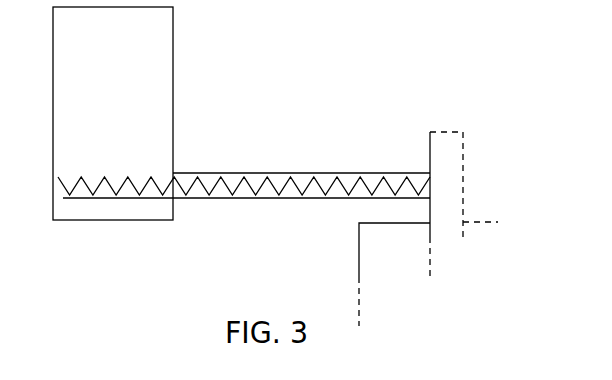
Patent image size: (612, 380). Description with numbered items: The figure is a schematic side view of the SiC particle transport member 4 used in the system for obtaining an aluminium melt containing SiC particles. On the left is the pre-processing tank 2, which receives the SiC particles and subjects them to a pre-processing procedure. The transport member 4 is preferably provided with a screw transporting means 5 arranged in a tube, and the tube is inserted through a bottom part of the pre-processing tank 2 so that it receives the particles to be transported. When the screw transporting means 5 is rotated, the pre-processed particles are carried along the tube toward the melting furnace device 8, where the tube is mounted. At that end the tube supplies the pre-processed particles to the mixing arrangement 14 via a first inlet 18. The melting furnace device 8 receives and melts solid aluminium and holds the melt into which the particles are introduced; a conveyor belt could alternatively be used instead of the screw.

The pre-processing tank 2 is at (113, 113).
The SiC particle transport member 4 is at (275, 173).
The screw transporting means 5 is at (318, 179).
The melting furnace device 8 is at (394, 274).
The mixing arrangement 14 is at (455, 172).
The first inlet 18 is at (430, 185).